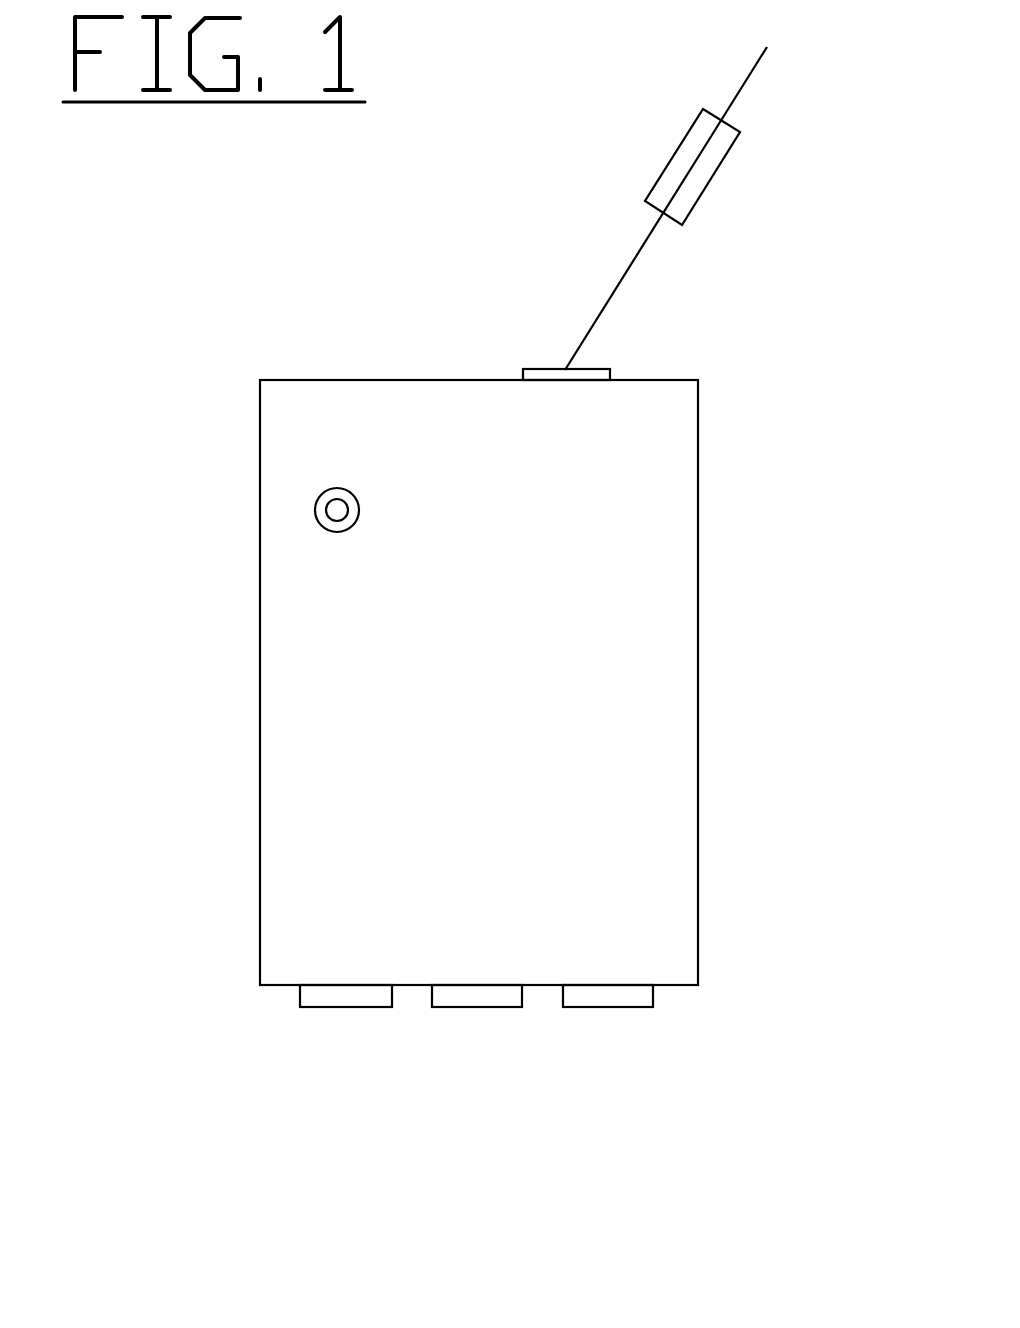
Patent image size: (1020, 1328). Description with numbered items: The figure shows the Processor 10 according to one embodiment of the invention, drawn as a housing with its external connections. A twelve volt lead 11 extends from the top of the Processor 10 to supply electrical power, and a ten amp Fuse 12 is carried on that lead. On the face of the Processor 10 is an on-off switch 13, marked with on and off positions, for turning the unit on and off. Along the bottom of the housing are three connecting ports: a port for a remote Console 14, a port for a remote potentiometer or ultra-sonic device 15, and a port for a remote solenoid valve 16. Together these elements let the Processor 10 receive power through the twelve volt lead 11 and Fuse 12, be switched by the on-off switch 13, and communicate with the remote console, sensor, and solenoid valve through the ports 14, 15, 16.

The Processor 10 is at (374, 367).
The twelve volt lead 11 is at (760, 87).
The 10 amp Fuse 12 is at (713, 200).
The on-off switch 13 is at (308, 486).
The connecting port for remote Console 14 is at (343, 1022).
The connecting port for remote potentiometer or ultra-sonic 15 is at (478, 1022).
The connecting port for remote solenoid valve 16 is at (600, 1022).